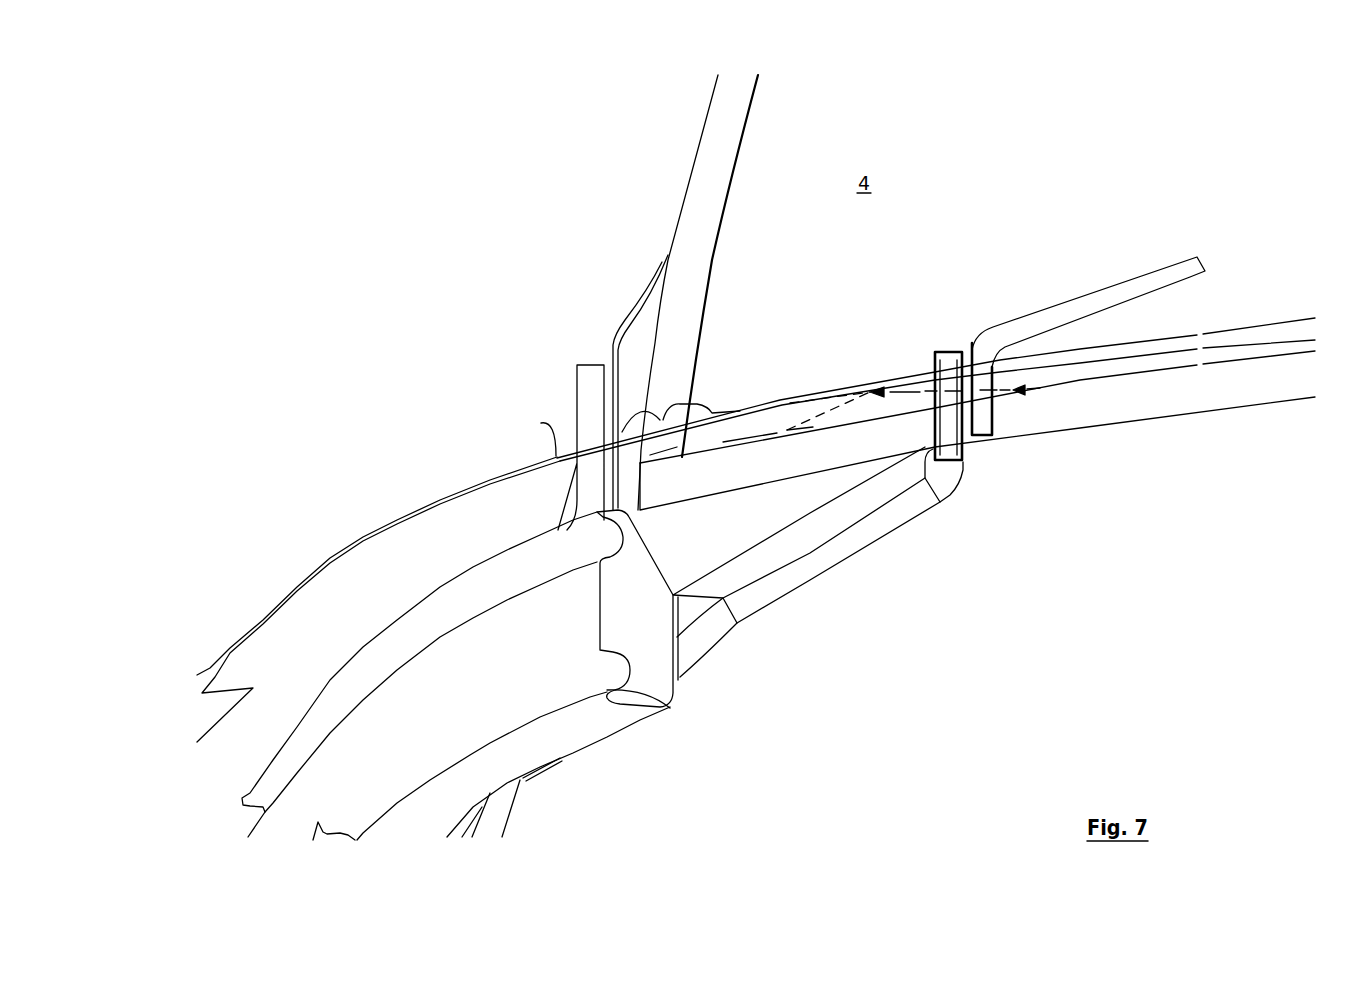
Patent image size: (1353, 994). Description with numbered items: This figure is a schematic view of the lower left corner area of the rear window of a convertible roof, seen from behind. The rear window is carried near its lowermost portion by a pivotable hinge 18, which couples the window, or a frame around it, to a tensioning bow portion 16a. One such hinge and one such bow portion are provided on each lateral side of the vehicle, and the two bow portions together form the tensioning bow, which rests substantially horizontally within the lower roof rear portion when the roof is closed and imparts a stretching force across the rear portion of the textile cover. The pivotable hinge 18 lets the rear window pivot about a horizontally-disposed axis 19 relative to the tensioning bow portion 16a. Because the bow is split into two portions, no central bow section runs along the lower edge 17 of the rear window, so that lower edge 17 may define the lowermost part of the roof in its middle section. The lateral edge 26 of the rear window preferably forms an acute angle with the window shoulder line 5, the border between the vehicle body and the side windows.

The window shoulder line 5 is at (557, 458).
The tensioning bow portion 16a is at (583, 682).
The lower edge 17 is at (767, 430).
The pivotable hinge 18 is at (1002, 402).
The horizontally-disposed axis 19 is at (907, 391).
The lateral edge 26 is at (707, 170).